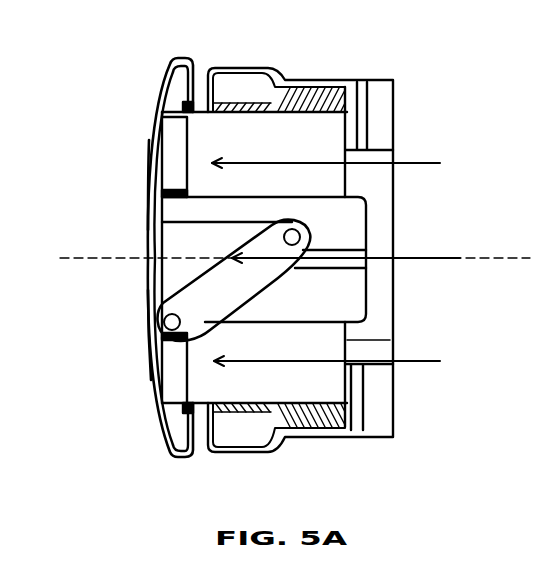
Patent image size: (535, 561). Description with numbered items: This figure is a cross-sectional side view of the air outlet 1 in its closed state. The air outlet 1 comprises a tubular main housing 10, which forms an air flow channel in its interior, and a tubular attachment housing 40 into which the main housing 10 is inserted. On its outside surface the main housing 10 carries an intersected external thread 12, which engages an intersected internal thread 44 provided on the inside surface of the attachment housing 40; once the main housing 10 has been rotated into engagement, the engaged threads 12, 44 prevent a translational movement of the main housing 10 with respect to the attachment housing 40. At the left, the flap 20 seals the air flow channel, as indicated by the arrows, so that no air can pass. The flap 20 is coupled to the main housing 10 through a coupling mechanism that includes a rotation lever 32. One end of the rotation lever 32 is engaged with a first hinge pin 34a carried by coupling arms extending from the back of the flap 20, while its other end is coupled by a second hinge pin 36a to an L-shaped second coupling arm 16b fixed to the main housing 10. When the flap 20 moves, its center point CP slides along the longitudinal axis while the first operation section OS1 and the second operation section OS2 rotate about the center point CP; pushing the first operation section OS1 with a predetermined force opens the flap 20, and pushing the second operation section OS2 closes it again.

The air outlet 1 is at (449, 117).
The main housing 10 is at (330, 170).
The intersected external thread 12 is at (240, 105).
The second coupling arm 16b is at (153, 397).
The flap 20 is at (155, 218).
The rotation lever 32 is at (242, 277).
The first hinge pin 34a is at (300, 228).
The second hinge pin 36a is at (165, 333).
The attachment housing 40 is at (380, 279).
The intersected internal thread 44 is at (256, 72).
The center point CP is at (142, 263).
The first operation section OS1 is at (145, 151).
The second operation section OS2 is at (143, 368).